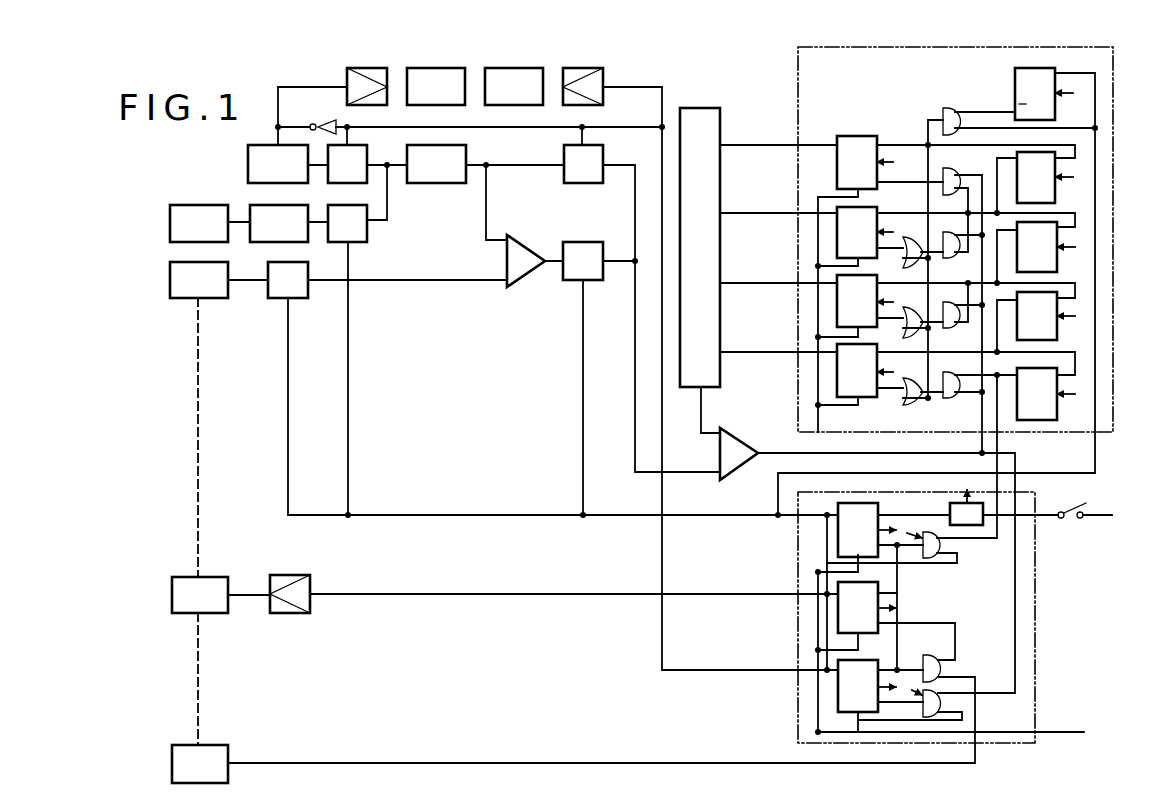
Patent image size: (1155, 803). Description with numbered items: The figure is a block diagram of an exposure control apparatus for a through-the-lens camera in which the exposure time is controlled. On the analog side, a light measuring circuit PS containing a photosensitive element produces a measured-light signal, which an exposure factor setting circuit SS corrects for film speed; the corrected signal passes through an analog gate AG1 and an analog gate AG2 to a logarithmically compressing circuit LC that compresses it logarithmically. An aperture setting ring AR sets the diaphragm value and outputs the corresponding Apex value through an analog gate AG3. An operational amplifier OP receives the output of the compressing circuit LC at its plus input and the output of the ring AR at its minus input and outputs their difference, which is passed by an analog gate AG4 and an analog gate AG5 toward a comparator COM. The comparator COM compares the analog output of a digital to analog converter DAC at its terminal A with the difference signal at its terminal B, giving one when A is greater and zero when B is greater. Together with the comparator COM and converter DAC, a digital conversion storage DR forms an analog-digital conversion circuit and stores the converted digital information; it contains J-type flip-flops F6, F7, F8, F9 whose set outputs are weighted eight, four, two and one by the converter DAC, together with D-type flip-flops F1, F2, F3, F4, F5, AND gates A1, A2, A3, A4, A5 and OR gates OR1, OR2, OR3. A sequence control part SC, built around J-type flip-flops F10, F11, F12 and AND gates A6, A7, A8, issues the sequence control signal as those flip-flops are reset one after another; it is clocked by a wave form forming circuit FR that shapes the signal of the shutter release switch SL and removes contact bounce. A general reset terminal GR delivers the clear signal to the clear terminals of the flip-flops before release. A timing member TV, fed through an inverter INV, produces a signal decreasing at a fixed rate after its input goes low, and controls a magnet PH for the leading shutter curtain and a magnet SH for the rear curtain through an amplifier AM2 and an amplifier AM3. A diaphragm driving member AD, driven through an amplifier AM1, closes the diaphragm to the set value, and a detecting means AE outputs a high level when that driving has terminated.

The timing member TV is at (238, 137).
The inverter INV is at (349, 115).
The amplifier AM1 is at (280, 613).
The amplifier AM2 is at (370, 54).
The amplifier AM3 is at (590, 68).
The magnet PH is at (486, 70).
The magnet SH is at (514, 86).
The logarithmically compressing circuit LC is at (484, 150).
The light measuring circuit PS is at (170, 224).
The exposure factor setting circuit SS is at (250, 210).
The aperture setting ring AR is at (170, 280).
The analog gate AG1 is at (360, 218).
The analog gate AG2 is at (360, 175).
The analog gate AG3 is at (300, 294).
The analog gate AG4 is at (566, 172).
The analog gate AG5 is at (540, 228).
The operational amplifier OP is at (522, 280).
The digital to analog converter DAC is at (685, 80).
The comparator COM is at (738, 476).
The diaphragm driving member AD is at (172, 592).
The diaphragm driving termination detecting means AE is at (228, 745).
The digital conversion storage DR is at (963, 256).
The sequence control part SC is at (1035, 712).
The general reset terminal GR is at (1098, 734).
The D-type flip-flop F1 is at (1048, 68).
The D-type flip-flop F2 is at (1055, 192).
The D-type flip-flop F3 is at (1057, 260).
The D-type flip-flop F4 is at (1057, 330).
The D-type flip-flop F5 is at (1057, 410).
The J-type flip-flop F6 is at (875, 136).
The J-type flip-flop F7 is at (875, 207).
The J-type flip-flop F8 is at (875, 275).
The J-type flip-flop F9 is at (875, 344).
The J-type flip-flop F10 is at (876, 505).
The J-type flip-flop F11 is at (880, 625).
The J-type flip-flop F12 is at (838, 688).
The AND gate A1 is at (935, 103).
The AND gate A2 is at (955, 168).
The AND gate A3 is at (955, 232).
The AND gate A4 is at (955, 302).
The AND gate A5 is at (955, 372).
The AND gate A6 is at (932, 558).
The AND gate A7 is at (940, 663).
The AND gate A8 is at (940, 700).
The OR gate OR1 is at (928, 268).
The OR gate OR2 is at (933, 338).
The OR gate OR3 is at (898, 406).
The wave form forming circuit FR is at (965, 525).
The shutter release switch SL is at (1070, 519).